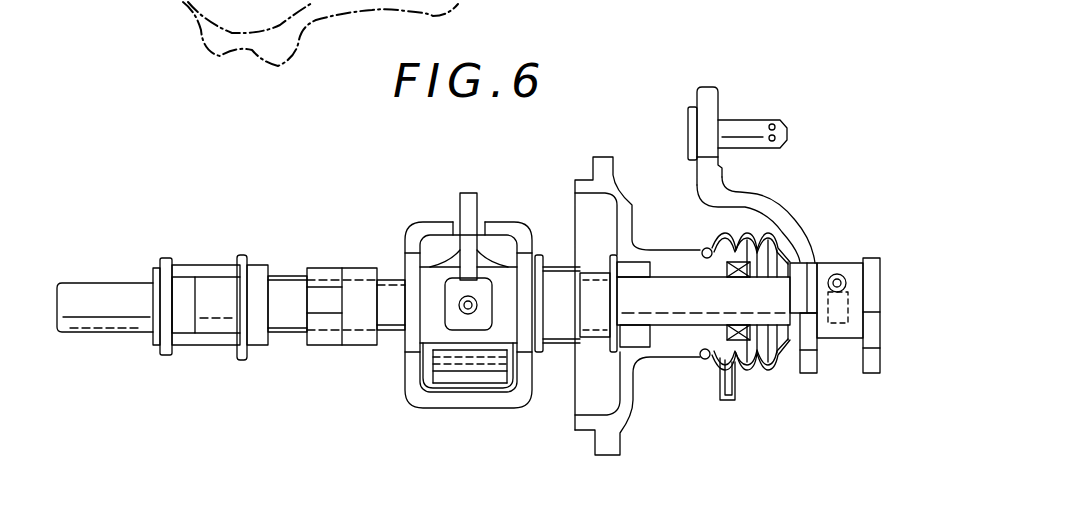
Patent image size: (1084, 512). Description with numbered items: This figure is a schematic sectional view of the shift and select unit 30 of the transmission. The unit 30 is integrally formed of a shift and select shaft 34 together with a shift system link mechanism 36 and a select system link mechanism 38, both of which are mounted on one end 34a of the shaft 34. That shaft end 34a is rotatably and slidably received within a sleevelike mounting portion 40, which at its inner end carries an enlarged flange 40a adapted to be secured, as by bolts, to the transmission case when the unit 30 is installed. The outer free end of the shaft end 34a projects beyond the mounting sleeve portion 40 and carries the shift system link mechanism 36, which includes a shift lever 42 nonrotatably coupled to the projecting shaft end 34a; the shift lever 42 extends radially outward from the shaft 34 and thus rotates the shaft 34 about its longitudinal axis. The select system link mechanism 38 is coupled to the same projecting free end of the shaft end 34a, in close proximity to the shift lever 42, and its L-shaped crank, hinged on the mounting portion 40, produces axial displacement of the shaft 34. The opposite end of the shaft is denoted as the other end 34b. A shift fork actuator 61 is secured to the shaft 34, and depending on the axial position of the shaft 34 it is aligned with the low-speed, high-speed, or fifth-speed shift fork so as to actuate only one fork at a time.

The shift and select unit 30 is at (737, 72).
The shift and select shaft 34 is at (390, 290).
The one end of the shift and select shaft 34a is at (667, 293).
The other end of the shift and select shaft 34b is at (90, 293).
The shift system link mechanism 36 is at (692, 104).
The select system link mechanism 38 is at (883, 287).
The sleevelike mounting portion 40 is at (678, 345).
The enlarged flange 40a is at (598, 441).
The shift lever 42 is at (780, 213).
The shift fork actuator 61 is at (473, 202).